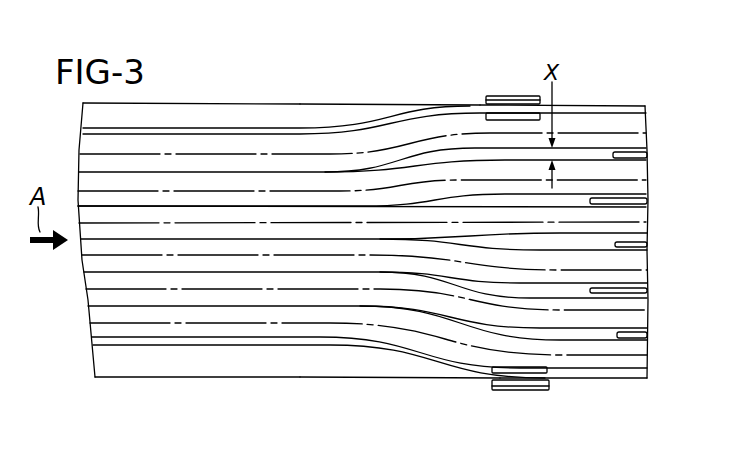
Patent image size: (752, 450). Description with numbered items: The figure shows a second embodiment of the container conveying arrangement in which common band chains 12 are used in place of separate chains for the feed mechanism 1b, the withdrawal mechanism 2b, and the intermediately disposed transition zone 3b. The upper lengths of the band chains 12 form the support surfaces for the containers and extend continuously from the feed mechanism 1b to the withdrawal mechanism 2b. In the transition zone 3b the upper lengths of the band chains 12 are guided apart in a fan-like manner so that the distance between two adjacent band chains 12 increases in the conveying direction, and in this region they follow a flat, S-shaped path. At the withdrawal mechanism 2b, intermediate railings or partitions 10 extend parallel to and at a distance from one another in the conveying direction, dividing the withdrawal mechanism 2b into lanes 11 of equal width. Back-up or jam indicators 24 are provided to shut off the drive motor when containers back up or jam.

The feed mechanism 1b is at (186, 100).
The withdrawal mechanism 2b is at (590, 100).
The transition zone 3b is at (395, 100).
The partitions 10 is at (634, 150).
The lanes 11 is at (656, 129).
The band chains 12 is at (98, 313).
The back-up or jam indicators 24 is at (502, 86).